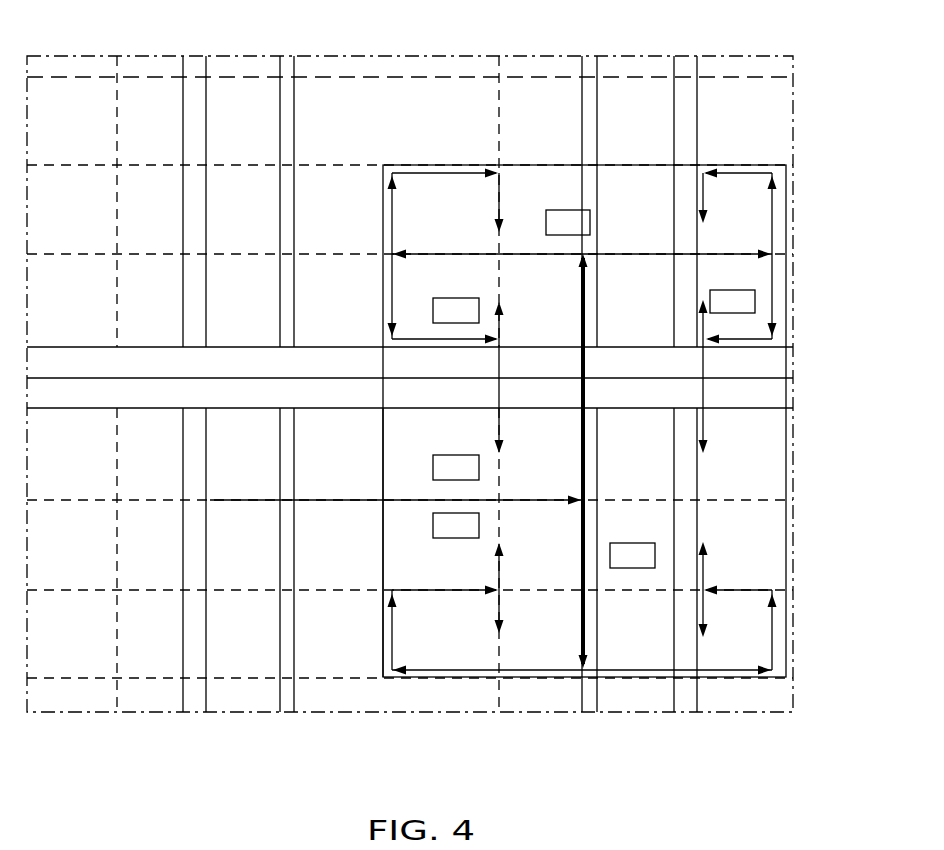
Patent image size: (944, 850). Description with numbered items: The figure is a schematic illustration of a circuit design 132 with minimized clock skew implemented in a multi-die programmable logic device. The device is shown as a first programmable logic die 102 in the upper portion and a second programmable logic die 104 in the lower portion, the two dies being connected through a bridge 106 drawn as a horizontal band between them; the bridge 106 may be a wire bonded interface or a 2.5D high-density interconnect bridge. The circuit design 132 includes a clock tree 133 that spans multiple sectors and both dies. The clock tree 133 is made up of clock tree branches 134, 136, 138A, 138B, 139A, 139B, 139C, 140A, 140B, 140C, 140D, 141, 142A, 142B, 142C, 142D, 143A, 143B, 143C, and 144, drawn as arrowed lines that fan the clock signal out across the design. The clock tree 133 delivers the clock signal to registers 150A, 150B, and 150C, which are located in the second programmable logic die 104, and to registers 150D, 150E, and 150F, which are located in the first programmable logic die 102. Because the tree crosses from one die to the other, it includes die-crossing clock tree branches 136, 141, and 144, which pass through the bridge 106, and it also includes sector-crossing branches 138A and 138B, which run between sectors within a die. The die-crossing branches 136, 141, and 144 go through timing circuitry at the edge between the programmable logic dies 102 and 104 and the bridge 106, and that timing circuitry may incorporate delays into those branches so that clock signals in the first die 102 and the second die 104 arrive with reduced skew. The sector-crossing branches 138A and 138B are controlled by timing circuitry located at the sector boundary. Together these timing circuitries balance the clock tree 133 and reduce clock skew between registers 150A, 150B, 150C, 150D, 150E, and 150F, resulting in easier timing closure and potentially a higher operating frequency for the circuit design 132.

The first programmable logic die 102 is at (810, 146).
The second programmable logic die 104 is at (811, 673).
The bridge 106 is at (797, 340).
The circuit design 132 is at (556, 679).
The clock tree 133 is at (352, 615).
The clock tree branch 134 is at (237, 502).
The clock tree branch 136 is at (581, 462).
The clock tree branch 138A is at (541, 252).
The clock tree branch 138B is at (620, 675).
The clock tree branch 139A is at (390, 635).
The clock tree branch 139B is at (440, 593).
The clock tree branch 139C is at (505, 600).
The clock tree branch 140A is at (772, 212).
The clock tree branch 140B is at (745, 180).
The clock tree branch 140C is at (715, 173).
The clock tree branch 140D is at (748, 338).
The clock tree branch 141 is at (705, 413).
The clock tree branch 142A is at (390, 222).
The clock tree branch 142B is at (487, 171).
The clock tree branch 142C is at (497, 198).
The clock tree branch 142D is at (442, 338).
The clock tree branch 143A is at (772, 645).
The clock tree branch 143B is at (745, 588).
The clock tree branch 143C is at (705, 612).
The clock tree branch 144 is at (505, 330).
The register 150A is at (632, 568).
The register 150B is at (433, 524).
The register 150C is at (433, 472).
The register 150D is at (452, 298).
The register 150E is at (563, 210).
The register 150F is at (758, 300).